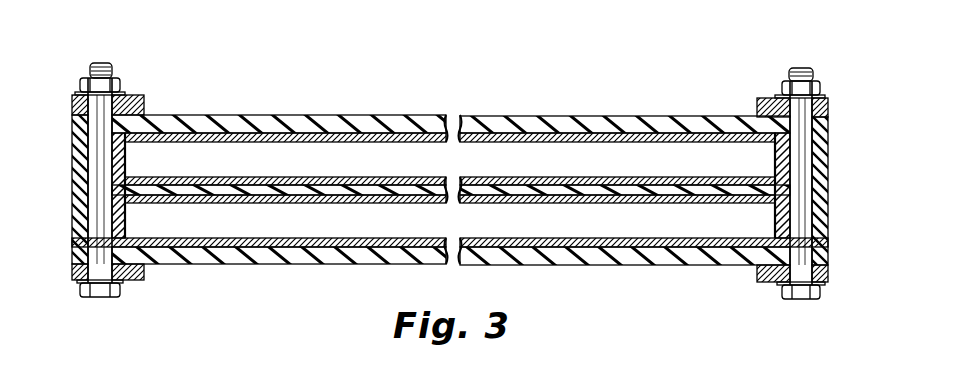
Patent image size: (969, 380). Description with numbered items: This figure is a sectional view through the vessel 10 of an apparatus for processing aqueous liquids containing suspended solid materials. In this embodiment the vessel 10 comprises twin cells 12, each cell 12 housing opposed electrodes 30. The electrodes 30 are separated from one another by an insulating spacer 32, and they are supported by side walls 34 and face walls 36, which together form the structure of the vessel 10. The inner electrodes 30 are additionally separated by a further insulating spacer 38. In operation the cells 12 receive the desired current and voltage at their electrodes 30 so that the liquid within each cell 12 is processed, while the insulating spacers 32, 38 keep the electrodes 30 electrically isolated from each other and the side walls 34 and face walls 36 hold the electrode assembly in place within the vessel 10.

The vessel 10 is at (518, 86).
The cell 12 is at (553, 169).
The electrode 30 is at (659, 177).
The insulating spacer 32 is at (128, 214).
The side wall 34 is at (73, 160).
The face wall 36 is at (372, 122).
The insulating spacer 38 is at (776, 194).